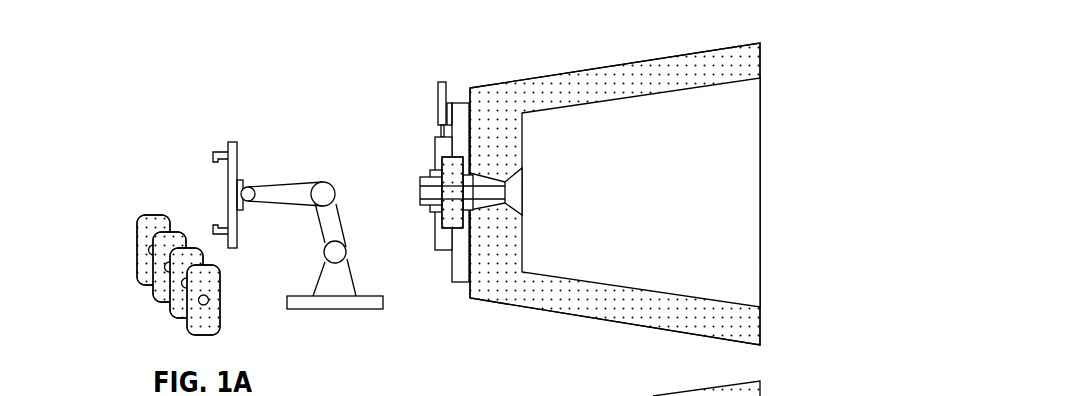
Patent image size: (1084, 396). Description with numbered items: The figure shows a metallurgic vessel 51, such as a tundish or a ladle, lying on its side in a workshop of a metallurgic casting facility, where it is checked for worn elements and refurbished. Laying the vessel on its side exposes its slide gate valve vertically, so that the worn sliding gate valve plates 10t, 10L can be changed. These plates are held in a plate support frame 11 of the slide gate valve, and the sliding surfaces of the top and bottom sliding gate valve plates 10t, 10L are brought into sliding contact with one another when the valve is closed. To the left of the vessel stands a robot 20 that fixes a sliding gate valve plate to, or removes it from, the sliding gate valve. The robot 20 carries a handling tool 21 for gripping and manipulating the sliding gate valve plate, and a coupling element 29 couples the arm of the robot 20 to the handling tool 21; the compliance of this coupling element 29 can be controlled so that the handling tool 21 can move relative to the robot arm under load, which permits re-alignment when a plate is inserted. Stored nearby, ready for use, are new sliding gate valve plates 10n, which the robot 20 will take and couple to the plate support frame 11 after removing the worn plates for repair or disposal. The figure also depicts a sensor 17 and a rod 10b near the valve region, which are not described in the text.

The new sliding gate valve plates 10n is at (175, 211).
The handling tool 21 is at (227, 141).
The coupling element 29 is at (241, 180).
The robot 20 is at (298, 157).
The sensor 17 is at (438, 84).
The bottom sliding gate valve plate 10L is at (442, 167).
The rod 10b is at (437, 193).
The top sliding gate valve plate 10t is at (470, 173).
The plate support frame 11 is at (443, 280).
The metallurgic vessel 51 is at (528, 71).